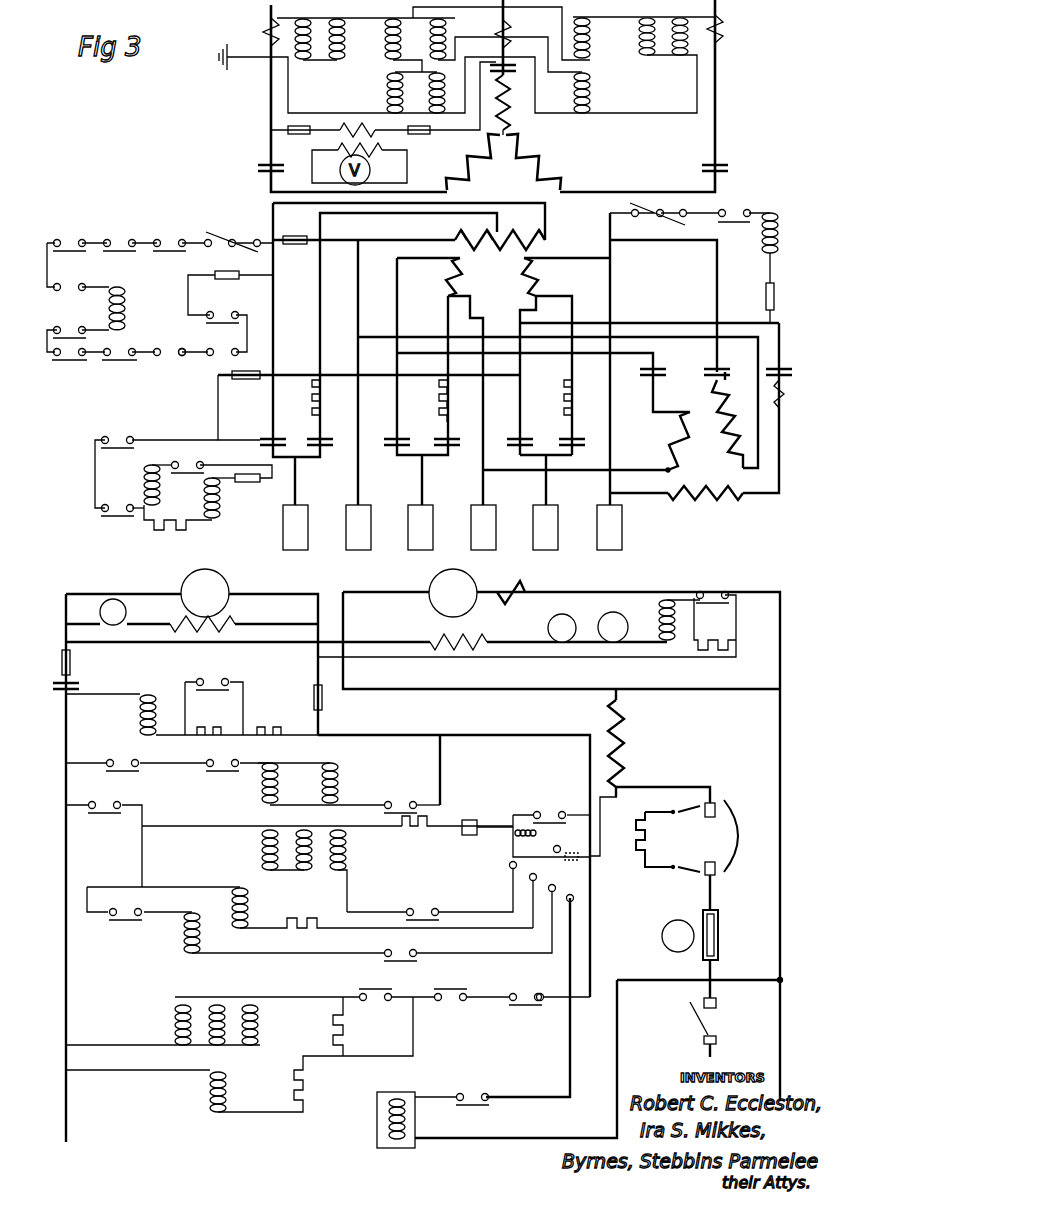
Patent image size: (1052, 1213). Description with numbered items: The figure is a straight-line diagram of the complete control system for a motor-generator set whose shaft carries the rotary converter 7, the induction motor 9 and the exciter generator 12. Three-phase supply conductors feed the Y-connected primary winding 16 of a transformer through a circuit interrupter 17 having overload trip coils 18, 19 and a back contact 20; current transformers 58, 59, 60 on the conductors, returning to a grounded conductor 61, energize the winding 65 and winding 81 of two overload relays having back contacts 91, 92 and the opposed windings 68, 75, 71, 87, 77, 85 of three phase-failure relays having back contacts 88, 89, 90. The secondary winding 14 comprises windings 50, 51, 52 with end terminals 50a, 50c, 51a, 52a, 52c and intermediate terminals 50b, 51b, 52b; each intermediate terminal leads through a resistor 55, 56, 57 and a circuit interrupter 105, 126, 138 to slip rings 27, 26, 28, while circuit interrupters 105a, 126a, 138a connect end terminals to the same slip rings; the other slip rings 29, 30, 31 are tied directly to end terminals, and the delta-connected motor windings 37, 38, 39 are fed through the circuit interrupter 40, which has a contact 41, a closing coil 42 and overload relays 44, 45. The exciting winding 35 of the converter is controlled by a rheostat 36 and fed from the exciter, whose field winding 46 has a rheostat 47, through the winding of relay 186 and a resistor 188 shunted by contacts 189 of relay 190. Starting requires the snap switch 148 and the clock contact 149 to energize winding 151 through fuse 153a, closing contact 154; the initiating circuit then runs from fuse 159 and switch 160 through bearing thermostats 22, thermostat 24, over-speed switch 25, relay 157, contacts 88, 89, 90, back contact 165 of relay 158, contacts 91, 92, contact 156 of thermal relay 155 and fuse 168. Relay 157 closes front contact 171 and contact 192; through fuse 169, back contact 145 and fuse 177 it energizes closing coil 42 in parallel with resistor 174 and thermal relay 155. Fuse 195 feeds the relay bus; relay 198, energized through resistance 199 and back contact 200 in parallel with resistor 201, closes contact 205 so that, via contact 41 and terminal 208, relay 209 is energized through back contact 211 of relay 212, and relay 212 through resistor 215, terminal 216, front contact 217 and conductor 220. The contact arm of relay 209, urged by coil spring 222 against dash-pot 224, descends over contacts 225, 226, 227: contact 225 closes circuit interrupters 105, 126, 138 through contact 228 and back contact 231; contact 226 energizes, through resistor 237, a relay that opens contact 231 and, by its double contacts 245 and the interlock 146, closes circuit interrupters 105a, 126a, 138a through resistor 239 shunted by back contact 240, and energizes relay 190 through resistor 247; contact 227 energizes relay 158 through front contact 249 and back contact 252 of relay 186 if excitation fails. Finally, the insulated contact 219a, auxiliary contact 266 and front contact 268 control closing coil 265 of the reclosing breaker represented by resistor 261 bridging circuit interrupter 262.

The rotary converter 7 is at (477, 593).
The induction motor 9 is at (690, 452).
The generator 12 is at (205, 593).
The secondary winding 14 is at (588, 381).
The primary winding 16 is at (544, 152).
The circuit interrupter 17 is at (258, 168).
The overload trip coil 18 is at (305, 50).
The overload trip coil 19 is at (682, 60).
The back contact 20 is at (68, 284).
The bearing thermostat 22 is at (169, 235).
The transformer thermostat 24 is at (119, 235).
The over-speed switch 25 is at (69, 235).
The slip ring 26 is at (420, 527).
The slip ring 27 is at (545, 527).
The slip ring 28 is at (295, 527).
The slip ring 29 is at (483, 527).
The slip ring 30 is at (609, 527).
The slip ring 31 is at (358, 527).
The exciting winding 35 is at (432, 638).
The rheostat 36 is at (548, 630).
The motor winding 37 is at (733, 422).
The motor winding 38 is at (668, 438).
The motor winding 39 is at (708, 498).
The circuit interrupter 40 is at (668, 368).
The contact 41 is at (212, 760).
The closing coil 42 is at (165, 492).
The overload relay 44 is at (190, 458).
The overload relay 45 is at (236, 471).
The field winding 46 is at (232, 618).
The controlling rheostat 47 is at (127, 613).
The transformer winding 50 is at (531, 277).
The terminal 50a is at (555, 300).
The terminal 50b is at (547, 284).
The terminal 50c is at (552, 262).
The transformer winding 51 is at (464, 277).
The terminal 51a is at (452, 262).
The terminal 51b is at (447, 296).
The transformer winding 52 is at (500, 244).
The terminal 52a is at (463, 235).
The terminal 52b is at (492, 228).
The terminal 52c is at (547, 238).
The resistor 55 is at (573, 404).
The resistor 56 is at (447, 402).
The resistor 57 is at (311, 396).
The current transformer 58 is at (265, 35).
The current transformer 59 is at (511, 38).
The current transformer 60 is at (723, 38).
The grounded conductor 61 is at (245, 62).
The overload relay winding 65 is at (340, 50).
The phase-failure relay winding 68 is at (385, 29).
The phase-failure relay winding 71 is at (430, 94).
The phase-failure relay coil 75 is at (449, 39).
The phase-failure relay coil 77 is at (590, 96).
The overload relay winding 81 is at (640, 60).
The phase-failure relay winding 85 is at (590, 38).
The phase-failure relay winding 87 is at (387, 94).
The back contact 88 is at (112, 364).
The back contact 89 is at (136, 364).
The back contact 90 is at (128, 362).
The back contact member 91 is at (190, 362).
The back contact member 92 is at (218, 356).
The circuit interrupter 105 is at (262, 848).
The circuit interrupter 105a is at (163, 1029).
The circuit interrupter 126 is at (452, 440).
The circuit interrupter 126a is at (217, 997).
The circuit interrupter 138 is at (355, 863).
The circuit interrupter 138a is at (262, 438).
The back contact member 145 is at (128, 504).
The back contact 146 is at (450, 996).
The snap switch 148 is at (648, 226).
The clock contact 149 is at (410, 296).
The relay winding 151 is at (762, 252).
The fuse 153a is at (766, 296).
The contact 154 is at (78, 325).
The thermal relay 155 is at (220, 506).
The contact 156 is at (226, 318).
The relay 157 is at (126, 318).
The relay 158 is at (184, 940).
The fuse 159 is at (294, 231).
The manually-operated switch 160 is at (233, 235).
The back contact 165 is at (168, 350).
The fuse 168 is at (212, 266).
The fuse 169 is at (250, 380).
The front contact 171 is at (108, 446).
The resistor 174 is at (190, 530).
The fuse 177 is at (255, 482).
The relay 186 is at (660, 620).
The resistor 188 is at (722, 634).
The contacts 189 is at (712, 595).
The relay 190 is at (208, 1093).
The contact 192 is at (74, 684).
The fuse 195 is at (580, 440).
The relay 198 is at (146, 694).
The resistance 199 is at (270, 726).
The back contact 200 is at (224, 678).
The resistor 201 is at (217, 725).
The contact 205 is at (113, 760).
The terminal 208 is at (262, 762).
The relay 209 is at (338, 766).
The back contact 211 is at (390, 800).
The relay 212 is at (262, 790).
The resistor 215 is at (402, 822).
The terminal 216 is at (510, 818).
The front contact 217 is at (547, 818).
The insulated contact 219a is at (590, 862).
The conductor 220 is at (548, 850).
The coil spring 222 is at (515, 826).
The dash-pot 224 is at (462, 832).
The contact 225 is at (509, 866).
The contact 226 is at (530, 880).
The contact 227 is at (562, 878).
The contact 228 is at (104, 803).
The back contact 231 is at (432, 905).
The resistor 237 is at (292, 930).
The resistor 239 is at (345, 1029).
The back contact 240 is at (382, 990).
The double contacts 245 is at (532, 990).
The resistor 247 is at (292, 1093).
The front contact 249 is at (124, 920).
The back contact 252 is at (385, 948).
The resistor 261 is at (636, 836).
The circuit interrupter 262 is at (722, 845).
The closing coil 265 is at (377, 1120).
The auxiliary contact 266 is at (568, 902).
The front contact 268 is at (462, 1094).